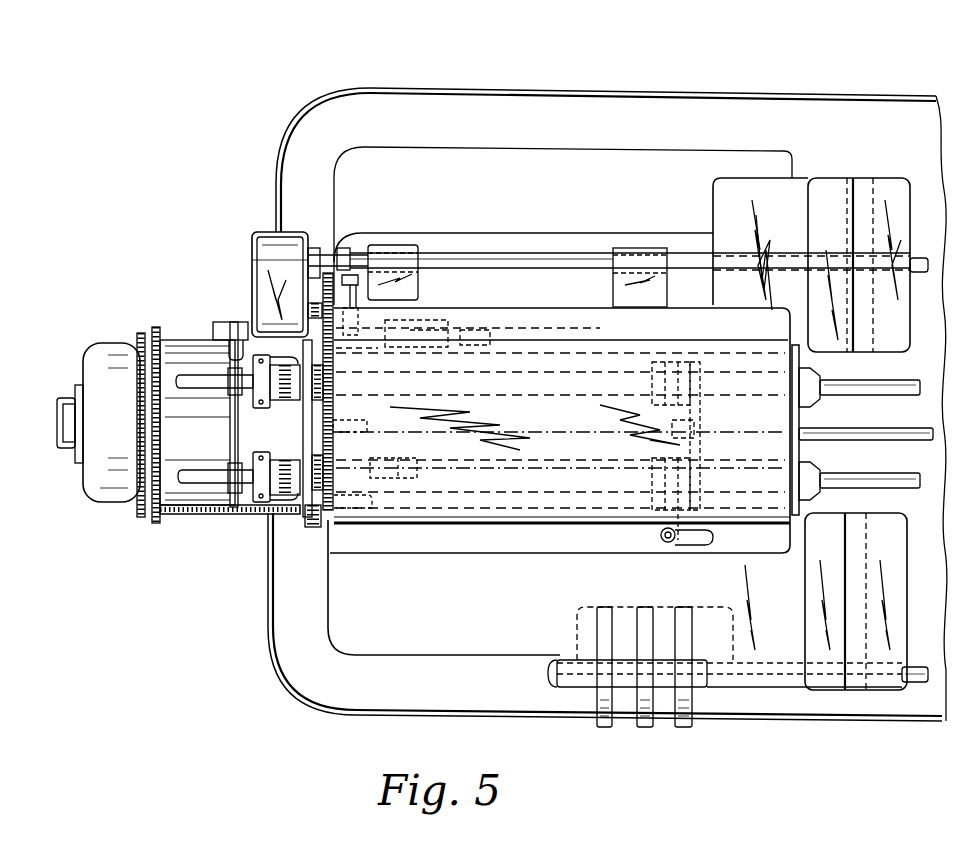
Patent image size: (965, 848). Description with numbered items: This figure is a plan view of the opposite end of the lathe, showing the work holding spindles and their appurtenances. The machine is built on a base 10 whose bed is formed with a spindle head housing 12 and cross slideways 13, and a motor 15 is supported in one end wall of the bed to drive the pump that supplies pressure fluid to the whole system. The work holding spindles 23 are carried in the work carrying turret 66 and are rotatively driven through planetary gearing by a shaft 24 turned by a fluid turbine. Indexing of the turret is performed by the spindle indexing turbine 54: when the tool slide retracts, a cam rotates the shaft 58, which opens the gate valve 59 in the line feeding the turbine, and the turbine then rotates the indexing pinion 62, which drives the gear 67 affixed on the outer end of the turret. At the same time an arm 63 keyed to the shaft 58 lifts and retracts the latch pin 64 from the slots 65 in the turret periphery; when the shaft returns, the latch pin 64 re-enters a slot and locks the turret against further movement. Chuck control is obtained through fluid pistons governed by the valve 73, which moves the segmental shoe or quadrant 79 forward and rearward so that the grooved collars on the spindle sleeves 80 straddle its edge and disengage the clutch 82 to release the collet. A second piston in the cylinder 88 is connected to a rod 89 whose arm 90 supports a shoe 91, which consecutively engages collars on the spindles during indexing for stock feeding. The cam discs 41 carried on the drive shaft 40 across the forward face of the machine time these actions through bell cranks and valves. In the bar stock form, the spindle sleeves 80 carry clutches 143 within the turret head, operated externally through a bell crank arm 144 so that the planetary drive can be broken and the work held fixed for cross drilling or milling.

The base 10 is at (706, 100).
The spindle head housing 12 is at (564, 430).
The cross slideways 13 is at (887, 205).
The motor 15 is at (115, 482).
The work holding spindles 23 is at (820, 380).
The shaft 24 is at (872, 430).
The drive shaft 40 is at (915, 684).
The cam discs 41 is at (605, 727).
The spindle indexing turbine 54 is at (277, 288).
The shaft 58 is at (492, 255).
The gate valve 59 is at (272, 238).
The indexing pinion 62 is at (328, 275).
The arm 63 is at (353, 263).
The latch pin 64 is at (358, 292).
The slots 65 is at (370, 426).
The work carrying turret 66 is at (815, 500).
The gear 67 is at (312, 528).
The valve 73 is at (428, 474).
The segmental shoe or quadrant 79 is at (303, 436).
The spindle sleeves 80 is at (281, 382).
The clutch 82 is at (258, 483).
The cylinder 88 is at (445, 320).
The rod 89 is at (213, 330).
The arm 90 is at (235, 338).
The shoe 91 is at (230, 421).
The clutches 143 is at (652, 497).
The bell crank arm 144 is at (700, 541).